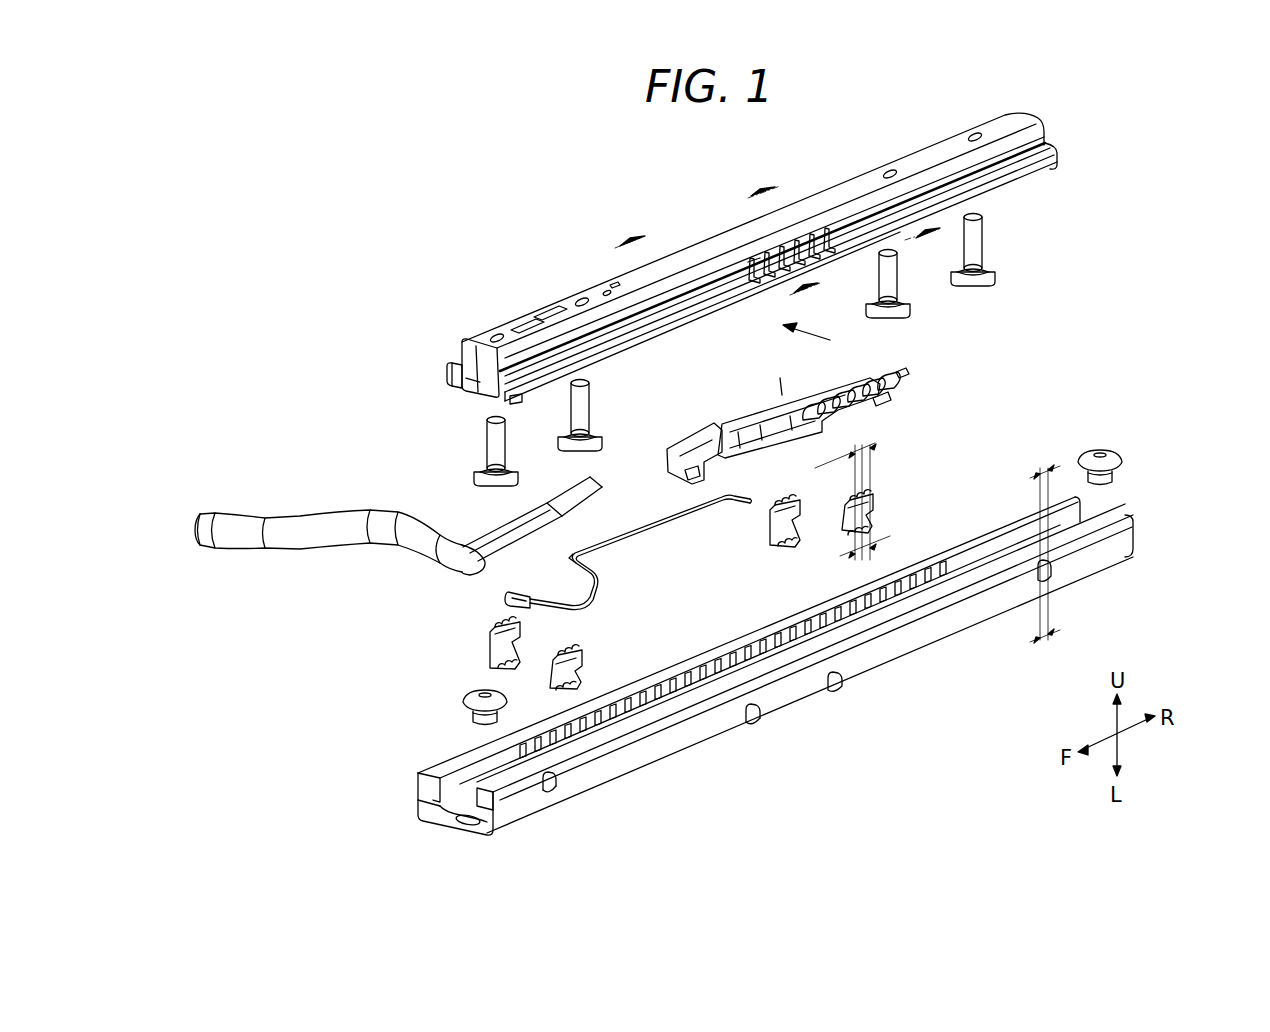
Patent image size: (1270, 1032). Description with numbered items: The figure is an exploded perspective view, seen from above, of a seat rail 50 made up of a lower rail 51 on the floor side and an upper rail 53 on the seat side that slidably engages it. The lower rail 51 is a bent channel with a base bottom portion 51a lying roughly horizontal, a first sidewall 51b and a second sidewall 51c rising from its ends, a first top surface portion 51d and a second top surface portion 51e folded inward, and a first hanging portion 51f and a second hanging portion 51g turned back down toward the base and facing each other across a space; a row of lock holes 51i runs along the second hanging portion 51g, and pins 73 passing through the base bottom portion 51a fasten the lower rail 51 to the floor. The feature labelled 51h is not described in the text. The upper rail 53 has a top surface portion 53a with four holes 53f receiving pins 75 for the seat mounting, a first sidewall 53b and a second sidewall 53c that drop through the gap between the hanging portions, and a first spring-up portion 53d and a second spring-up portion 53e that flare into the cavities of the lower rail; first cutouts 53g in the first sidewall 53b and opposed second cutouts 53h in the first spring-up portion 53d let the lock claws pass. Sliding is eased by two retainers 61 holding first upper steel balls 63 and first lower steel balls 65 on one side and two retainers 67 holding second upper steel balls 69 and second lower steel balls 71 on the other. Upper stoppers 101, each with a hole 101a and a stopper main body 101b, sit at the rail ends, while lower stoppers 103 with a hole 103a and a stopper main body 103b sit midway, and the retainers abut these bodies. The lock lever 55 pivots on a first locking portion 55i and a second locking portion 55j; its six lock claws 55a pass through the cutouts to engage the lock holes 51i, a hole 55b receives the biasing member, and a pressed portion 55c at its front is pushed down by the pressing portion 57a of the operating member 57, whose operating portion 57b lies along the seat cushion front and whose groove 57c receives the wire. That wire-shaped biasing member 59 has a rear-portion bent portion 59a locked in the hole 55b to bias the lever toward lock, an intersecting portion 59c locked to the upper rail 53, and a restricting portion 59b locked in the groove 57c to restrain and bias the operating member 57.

The seat rail 50 is at (1220, 265).
The lower rail 51 is at (1140, 508).
The base bottom portion 51a is at (455, 832).
The first sidewall 51b is at (510, 810).
The second sidewall 51c is at (418, 782).
The first top surface portion 51d is at (490, 750).
The second top surface portion 51e is at (470, 768).
The first hanging portion 51f is at (440, 818).
The second hanging portion 51g is at (418, 806).
The hole in lower rail bottom wall 51h is at (475, 825).
The lock holes 51i is at (722, 660).
The upper rail 53 is at (1050, 170).
The top surface portion 53a is at (478, 334).
The first sidewall 53b is at (560, 356).
The second sidewall 53c is at (470, 390).
The first spring-up portion 53d is at (522, 398).
The second spring-up portion 53e is at (445, 372).
The holes 53f is at (497, 332).
The first cutouts 53g is at (830, 233).
The second cutouts 53h is at (755, 258).
The lock lever 55 is at (752, 424).
The lock claws 55a is at (905, 372).
The hole 55b is at (806, 405).
The pressed portion 55c is at (690, 445).
The first locking portion 55i is at (690, 480).
The second locking portion 55j is at (888, 402).
The operating member 57 is at (330, 550).
The pressing portion 57a is at (598, 480).
The operating portion 57b is at (207, 512).
The groove 57c is at (490, 543).
The biasing member 59 is at (645, 530).
The rear-portion bent portion 59a is at (735, 505).
The restricting portion 59b is at (518, 592).
The intersecting portion 59c is at (580, 558).
The retainers 61 is at (852, 522).
The first upper steel balls 63 is at (873, 497).
The first lower steel balls 65 is at (870, 528).
The retainers 67 is at (770, 530).
The second upper steel balls 69 is at (780, 505).
The second lower steel balls 71 is at (778, 548).
The pins 73 is at (1101, 450).
The pins 75 is at (486, 448).
The upper stoppers 101 is at (705, 795).
The hole 101a is at (555, 777).
The stopper main body 101b is at (558, 785).
The lower stoppers 103 is at (875, 808).
The hole 103a is at (762, 715).
The stopper main body 103b is at (765, 722).